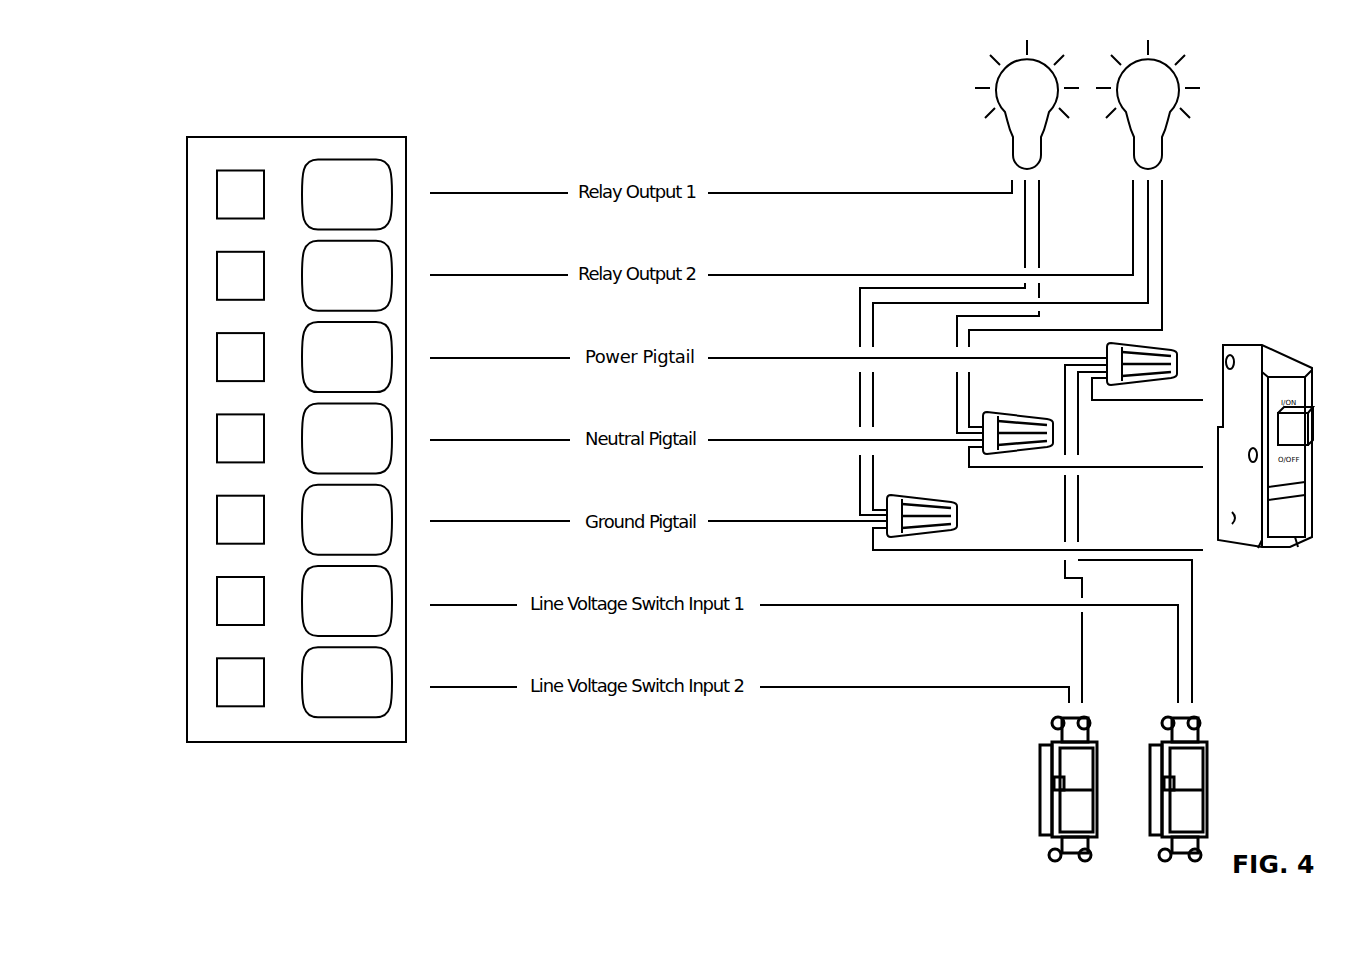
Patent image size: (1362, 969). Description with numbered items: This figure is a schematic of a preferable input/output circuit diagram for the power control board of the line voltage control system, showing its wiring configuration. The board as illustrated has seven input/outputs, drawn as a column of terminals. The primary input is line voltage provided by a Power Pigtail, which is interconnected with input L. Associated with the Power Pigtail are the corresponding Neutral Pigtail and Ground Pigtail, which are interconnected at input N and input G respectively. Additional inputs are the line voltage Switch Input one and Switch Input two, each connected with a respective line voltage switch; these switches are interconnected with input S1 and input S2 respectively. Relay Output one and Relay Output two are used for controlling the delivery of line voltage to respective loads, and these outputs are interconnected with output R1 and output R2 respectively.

The output R1 is at (252, 195).
The output R2 is at (252, 276).
The input L is at (252, 357).
The input N is at (252, 438).
The input G is at (252, 520).
The input S1 is at (252, 601).
The input S2 is at (252, 682).